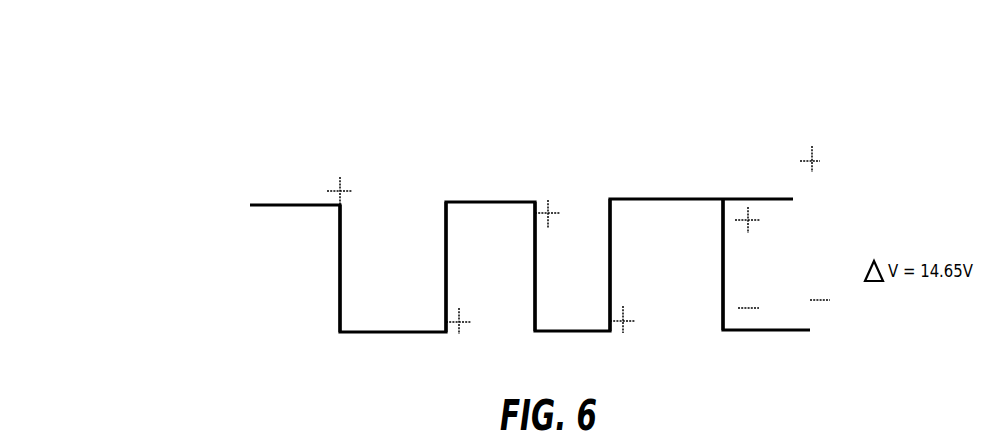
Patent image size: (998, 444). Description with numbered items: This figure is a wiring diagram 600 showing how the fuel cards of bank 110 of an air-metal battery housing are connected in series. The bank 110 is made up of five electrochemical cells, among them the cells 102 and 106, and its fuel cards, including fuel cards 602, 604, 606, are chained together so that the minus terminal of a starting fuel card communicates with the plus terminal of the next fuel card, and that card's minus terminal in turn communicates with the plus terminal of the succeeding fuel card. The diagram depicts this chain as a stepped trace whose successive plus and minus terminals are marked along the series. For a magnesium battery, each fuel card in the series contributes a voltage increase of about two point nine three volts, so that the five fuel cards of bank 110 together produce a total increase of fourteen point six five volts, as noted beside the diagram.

The first bank 110 is at (451, 244).
The current waveform diagram 600 is at (694, 103).
The cell 102 is at (339, 283).
The cell 106 is at (445, 277).
The fuel card 602 is at (534, 283).
The fuel card 604 is at (608, 293).
The fuel card 606 is at (721, 288).